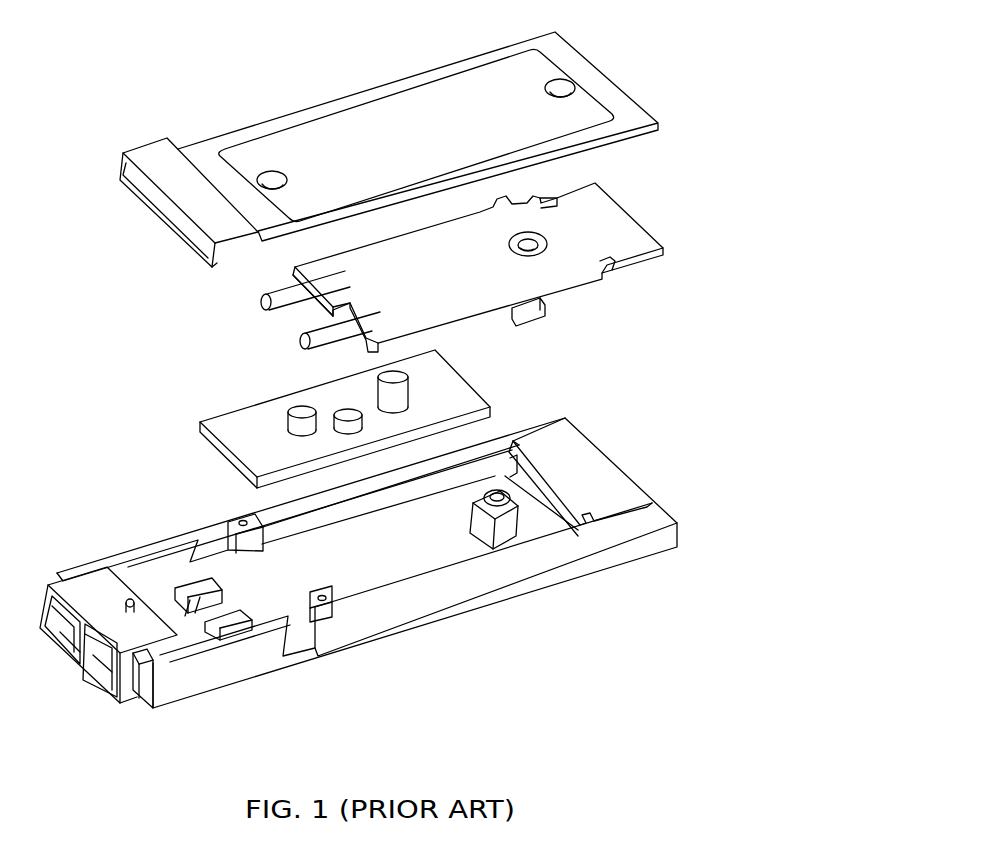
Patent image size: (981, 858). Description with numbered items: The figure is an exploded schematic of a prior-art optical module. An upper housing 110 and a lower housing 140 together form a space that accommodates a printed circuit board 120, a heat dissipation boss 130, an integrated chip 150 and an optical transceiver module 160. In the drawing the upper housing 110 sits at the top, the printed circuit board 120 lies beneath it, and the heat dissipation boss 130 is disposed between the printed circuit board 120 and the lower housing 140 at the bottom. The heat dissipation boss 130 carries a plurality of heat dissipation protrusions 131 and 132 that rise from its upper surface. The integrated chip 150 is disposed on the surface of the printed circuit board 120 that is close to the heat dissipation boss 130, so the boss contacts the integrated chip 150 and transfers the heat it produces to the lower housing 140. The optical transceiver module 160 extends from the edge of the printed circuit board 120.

The upper housing 110 is at (393, 136).
The printed circuit board 120 is at (504, 267).
The heat dissipation boss 130 is at (327, 420).
The heat dissipation protrusion 131 is at (249, 404).
The heat dissipation protrusion 132 is at (466, 379).
The lower housing 140 is at (370, 563).
The integrated chip 150 is at (576, 323).
The optical transceiver module 160 is at (240, 299).